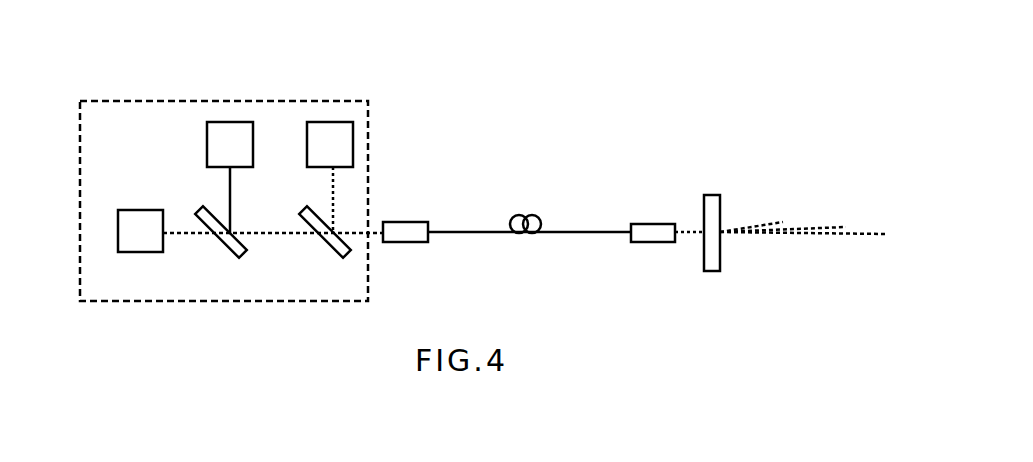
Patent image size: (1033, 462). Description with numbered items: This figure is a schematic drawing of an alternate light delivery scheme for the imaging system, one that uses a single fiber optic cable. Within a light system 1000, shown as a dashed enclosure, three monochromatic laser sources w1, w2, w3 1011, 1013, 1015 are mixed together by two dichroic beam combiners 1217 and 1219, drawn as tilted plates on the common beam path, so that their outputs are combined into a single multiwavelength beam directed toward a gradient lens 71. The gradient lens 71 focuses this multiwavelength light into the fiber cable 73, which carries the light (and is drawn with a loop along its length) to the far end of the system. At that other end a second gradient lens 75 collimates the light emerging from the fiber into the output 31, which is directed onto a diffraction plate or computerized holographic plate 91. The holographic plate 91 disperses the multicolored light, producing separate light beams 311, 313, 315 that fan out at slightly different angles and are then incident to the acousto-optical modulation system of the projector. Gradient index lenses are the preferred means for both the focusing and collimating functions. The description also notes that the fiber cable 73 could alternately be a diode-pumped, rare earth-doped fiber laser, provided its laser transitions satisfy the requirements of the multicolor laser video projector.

The light system 1000 is at (156, 143).
The laser source w1 1011 is at (306, 163).
The laser source w2 1013 is at (161, 254).
The laser source w3 1015 is at (207, 154).
The dichroic beam combiner 1217 is at (226, 249).
The dichroic beam combiner 1219 is at (330, 250).
The gradient lens 71 is at (403, 222).
The fiber cable 73 is at (573, 232).
The gradient lens 75 is at (667, 243).
The output 31 is at (687, 231).
The holographic plate 91 is at (716, 272).
The light beam 311 is at (748, 228).
The light beam 313 is at (818, 228).
The light beam 315 is at (855, 233).